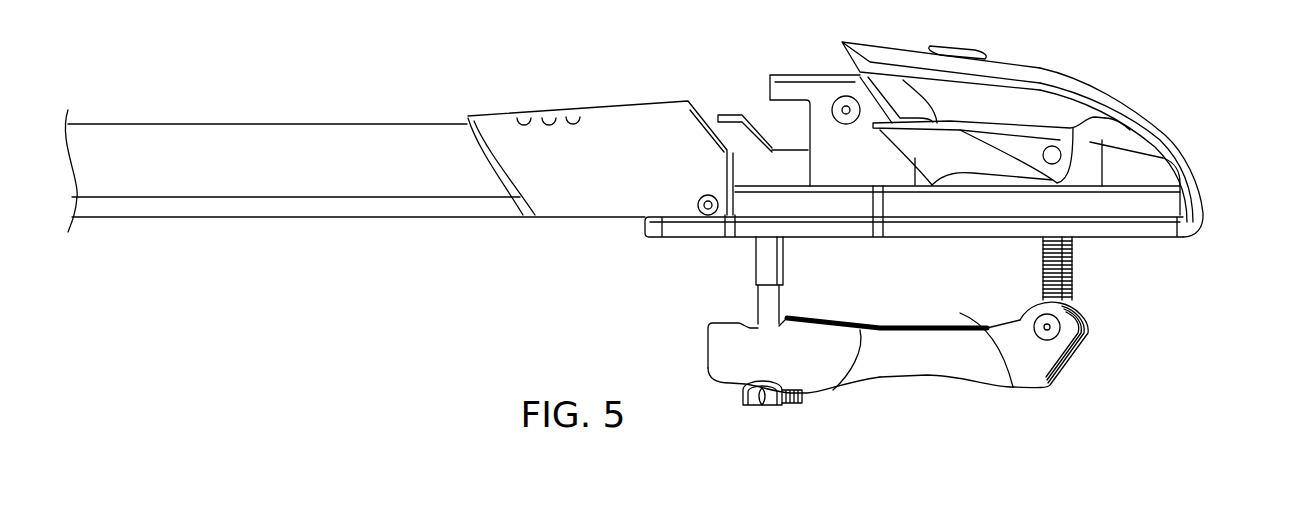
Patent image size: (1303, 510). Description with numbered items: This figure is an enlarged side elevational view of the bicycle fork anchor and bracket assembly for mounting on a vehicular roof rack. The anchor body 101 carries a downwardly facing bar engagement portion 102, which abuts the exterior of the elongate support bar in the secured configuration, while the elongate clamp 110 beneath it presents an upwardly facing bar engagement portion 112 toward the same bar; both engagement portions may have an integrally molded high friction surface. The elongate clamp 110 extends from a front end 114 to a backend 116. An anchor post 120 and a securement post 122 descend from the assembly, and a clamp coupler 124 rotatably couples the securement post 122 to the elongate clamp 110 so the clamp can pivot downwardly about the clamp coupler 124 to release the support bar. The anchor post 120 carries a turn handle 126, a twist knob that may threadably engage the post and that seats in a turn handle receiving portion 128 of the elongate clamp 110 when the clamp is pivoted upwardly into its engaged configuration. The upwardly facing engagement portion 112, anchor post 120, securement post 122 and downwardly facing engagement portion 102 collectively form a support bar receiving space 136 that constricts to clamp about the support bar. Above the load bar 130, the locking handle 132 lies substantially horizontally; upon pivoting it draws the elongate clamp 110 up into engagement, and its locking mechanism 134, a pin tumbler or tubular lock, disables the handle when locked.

The anchor body 101 is at (1225, 63).
The downwardly facing bar engagement portion 102 is at (687, 240).
The elongate clamp 110 is at (922, 375).
The upwardly facing bar engagement portion 112 is at (837, 373).
The front end 114 is at (1063, 373).
The backend 116 is at (708, 348).
The anchor post 120 is at (755, 274).
The securement post 122 is at (1072, 257).
The clamp coupler 124 is at (1060, 327).
The turn handle 126 is at (763, 406).
The turn handle receiving portion 128 is at (745, 390).
The load bar 130 is at (197, 123).
The locking handle 132 is at (1020, 127).
The locking mechanism 134 is at (903, 78).
The support bar receiving space 136 is at (1014, 388).